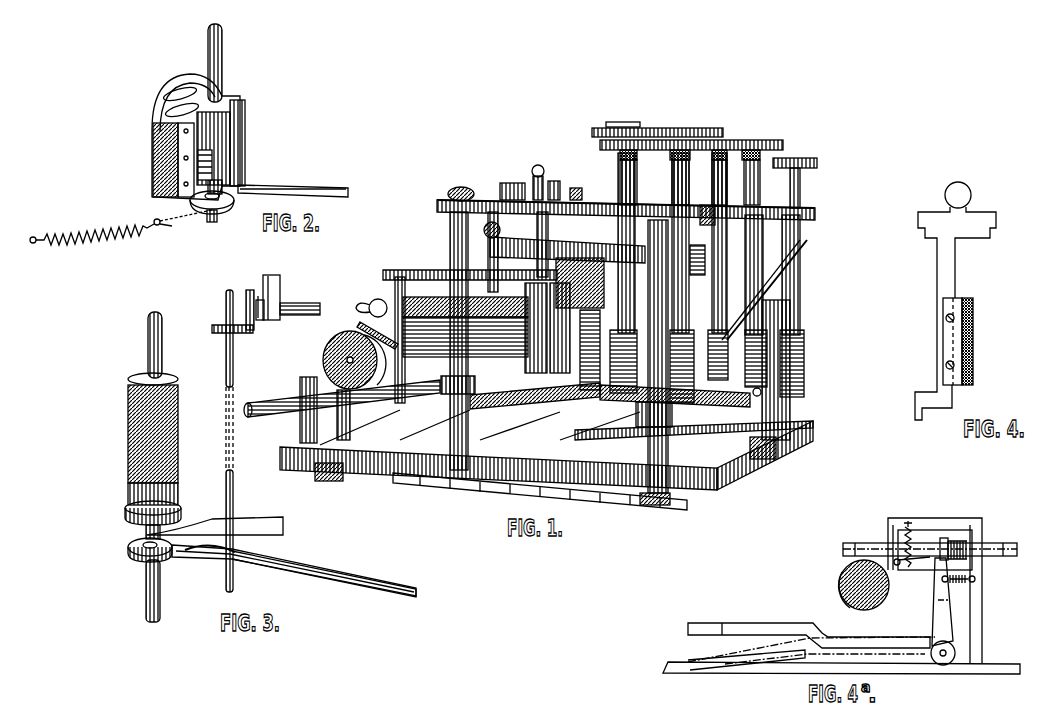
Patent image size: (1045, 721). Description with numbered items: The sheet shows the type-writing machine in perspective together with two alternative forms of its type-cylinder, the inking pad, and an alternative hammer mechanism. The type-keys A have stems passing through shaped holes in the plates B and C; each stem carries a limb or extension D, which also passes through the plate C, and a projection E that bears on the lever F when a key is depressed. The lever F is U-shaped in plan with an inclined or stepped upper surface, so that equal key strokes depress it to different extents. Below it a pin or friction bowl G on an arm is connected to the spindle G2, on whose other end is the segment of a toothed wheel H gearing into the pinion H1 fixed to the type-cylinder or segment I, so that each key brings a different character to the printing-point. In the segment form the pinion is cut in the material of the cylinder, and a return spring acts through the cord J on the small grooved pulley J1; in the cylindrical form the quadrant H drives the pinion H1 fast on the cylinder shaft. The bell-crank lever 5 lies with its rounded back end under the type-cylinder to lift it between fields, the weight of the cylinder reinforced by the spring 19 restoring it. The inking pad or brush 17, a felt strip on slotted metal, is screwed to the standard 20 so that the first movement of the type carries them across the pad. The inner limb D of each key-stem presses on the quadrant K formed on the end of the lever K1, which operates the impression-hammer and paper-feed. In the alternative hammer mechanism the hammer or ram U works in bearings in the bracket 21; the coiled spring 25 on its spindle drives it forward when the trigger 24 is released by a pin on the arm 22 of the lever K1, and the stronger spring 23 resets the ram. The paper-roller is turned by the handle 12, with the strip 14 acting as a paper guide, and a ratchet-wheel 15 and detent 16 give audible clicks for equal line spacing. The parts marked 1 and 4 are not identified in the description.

In FIG. 2, the arm 1 is at (293, 183).
In FIG. 3, the arm 1 is at (355, 584).
In FIG. 1, the bar 4 is at (817, 165).
In FIG. 3, the bell-crank lever 5 is at (215, 519).
In FIG. 1, the bell-crank lever 5 is at (785, 255).
In FIG. 1, the handle 12 is at (326, 352).
In FIG. 4A, the guide strip 14 is at (842, 588).
In FIG. 1, the guide strip 14 is at (420, 330).
In FIG. 1, the ratchet-wheel 15 is at (373, 330).
In FIG. 1, the detent 16 is at (368, 310).
In FIG. 4, the inking pad or brush 17 is at (973, 323).
In FIG. 2, the spring 19 is at (195, 147).
In FIG. 4, the standard 20 is at (965, 204).
In FIG. 1, the standard 20 is at (541, 180).
In FIG. 4A, the bracket 21 is at (841, 596).
In FIG. 4A, the arm 22 is at (947, 597).
In FIG. 4A, the spring 23 is at (972, 573).
In FIG. 4A, the trigger 24 is at (923, 560).
In FIG. 4A, the coiled spring 25 is at (955, 540).
In FIG. 1, the type-keys A is at (678, 138).
In FIG. 1, the plate B is at (595, 200).
In FIG. 1, the plate C is at (800, 395).
In FIG. 1, the limb or extension D is at (614, 356).
In FIG. 1, the projection E is at (670, 243).
In FIG. 1, the lever F is at (492, 237).
In FIG. 1, the pin or friction bowl G is at (708, 243).
In FIG. 3, the spindle G2 is at (298, 307).
In FIG. 3, the segment of toothed wheel H is at (221, 556).
In FIG. 2, the pinion H1 is at (241, 114).
In FIG. 3, the pinion H1 is at (145, 573).
In FIG. 2, the type-cylinder or segment I is at (157, 113).
In FIG. 3, the type-cylinder or segment I is at (130, 437).
In FIG. 2, the cord J is at (166, 226).
In FIG. 2, the grooved pulley J1 is at (226, 206).
In FIG. 4A, the quadrant K is at (707, 624).
In FIG. 4A, the lever K1 is at (811, 641).
In FIG. 4A, the hammer or ram U is at (988, 550).